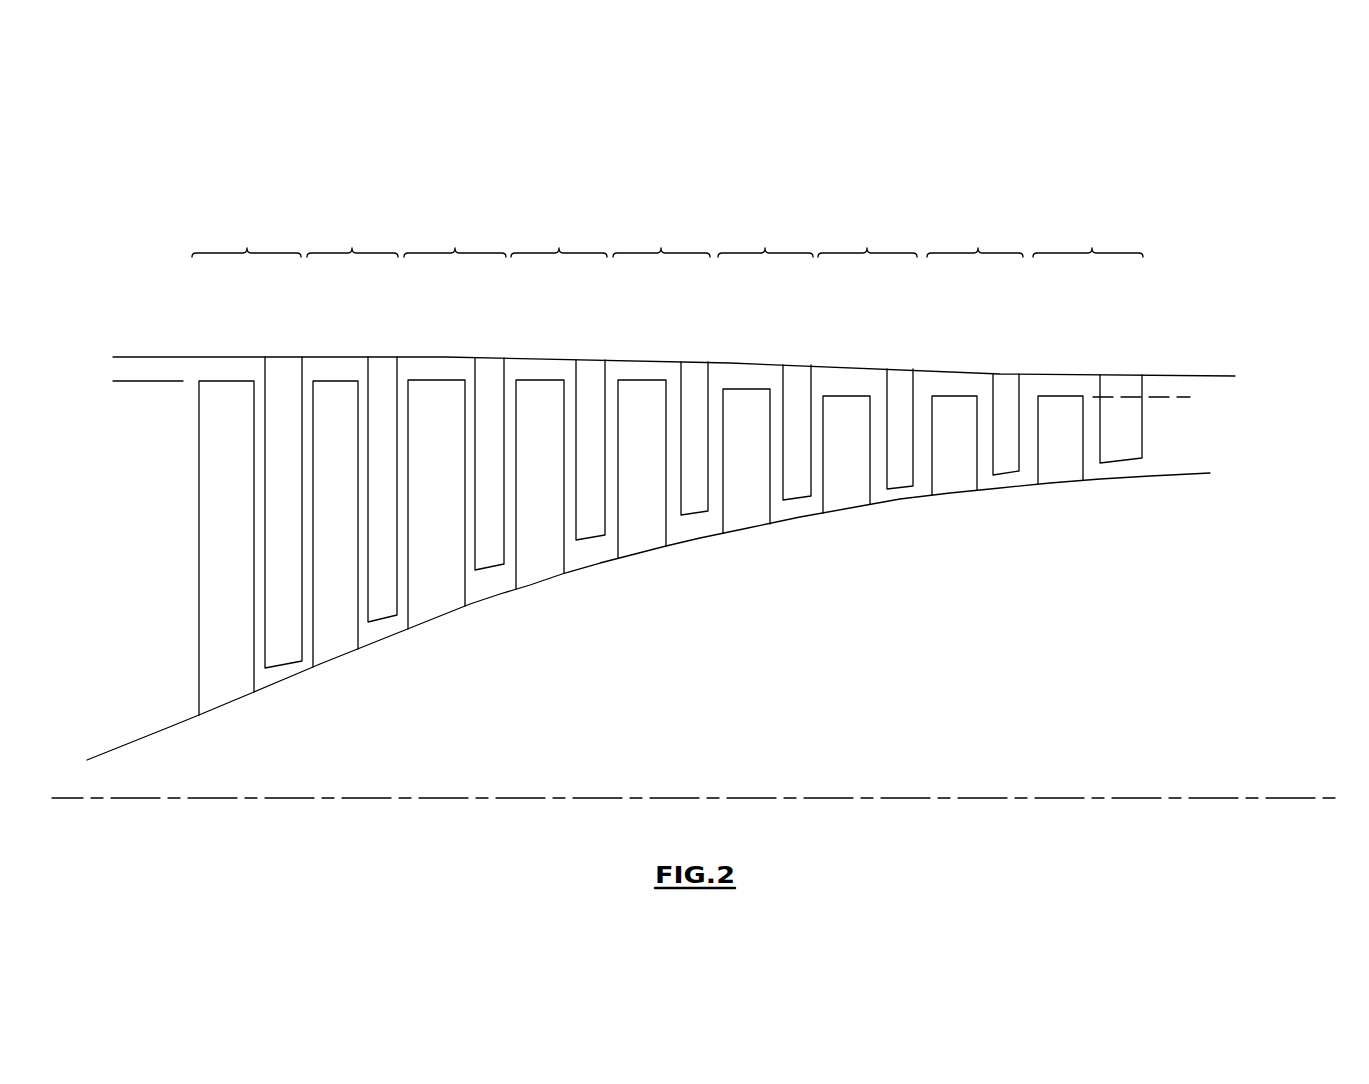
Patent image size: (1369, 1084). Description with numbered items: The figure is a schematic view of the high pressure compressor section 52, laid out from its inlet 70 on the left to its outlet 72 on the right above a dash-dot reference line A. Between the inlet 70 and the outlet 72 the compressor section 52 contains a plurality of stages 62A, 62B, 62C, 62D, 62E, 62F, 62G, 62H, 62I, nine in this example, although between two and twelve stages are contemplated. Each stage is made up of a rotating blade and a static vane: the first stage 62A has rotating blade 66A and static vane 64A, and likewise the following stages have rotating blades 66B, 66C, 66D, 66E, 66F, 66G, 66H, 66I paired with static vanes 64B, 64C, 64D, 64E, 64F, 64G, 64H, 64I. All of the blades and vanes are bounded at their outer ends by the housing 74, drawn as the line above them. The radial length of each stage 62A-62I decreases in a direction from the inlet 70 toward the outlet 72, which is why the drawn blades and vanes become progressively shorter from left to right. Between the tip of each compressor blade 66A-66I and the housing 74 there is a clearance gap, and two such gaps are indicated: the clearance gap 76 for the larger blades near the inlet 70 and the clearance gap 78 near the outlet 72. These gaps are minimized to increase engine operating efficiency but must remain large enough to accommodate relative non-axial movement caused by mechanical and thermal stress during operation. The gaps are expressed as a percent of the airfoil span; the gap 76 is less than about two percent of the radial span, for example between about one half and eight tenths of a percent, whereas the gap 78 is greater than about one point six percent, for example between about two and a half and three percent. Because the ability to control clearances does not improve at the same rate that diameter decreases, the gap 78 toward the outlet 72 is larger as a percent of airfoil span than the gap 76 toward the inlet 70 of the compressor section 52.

The high pressure compressor section 52 is at (984, 167).
The stage 62A is at (246, 237).
The stage 62B is at (352, 237).
The stage 62C is at (455, 237).
The stage 62D is at (559, 237).
The stage 62E is at (661, 237).
The stage 62F is at (765, 237).
The stage 62G is at (867, 237).
The stage 62H is at (975, 237).
The stage 62I is at (1088, 237).
The static vane 64A is at (283, 374).
The static vane 64B is at (381, 374).
The static vane 64C is at (490, 375).
The static vane 64D is at (591, 377).
The static vane 64E is at (693, 378).
The static vane 64F is at (797, 383).
The static vane 64G is at (902, 389).
The static vane 64H is at (1003, 387).
The static vane 64I is at (1123, 393).
The rotating blade 66A is at (223, 605).
The rotating blade 66B is at (332, 642).
The rotating blade 66C is at (437, 598).
The rotating blade 66D is at (538, 558).
The rotating blade 66E is at (642, 530).
The rotating blade 66F is at (752, 512).
The rotating blade 66G is at (848, 500).
The rotating blade 66H is at (958, 480).
The rotating blade 66I is at (1063, 468).
The inlet 70 is at (115, 568).
The outlet 72 is at (1226, 416).
The housing 74 is at (135, 357).
The clearance gap 76 is at (135, 382).
The clearance gap 78 is at (1068, 438).
The engine axis A is at (1322, 797).